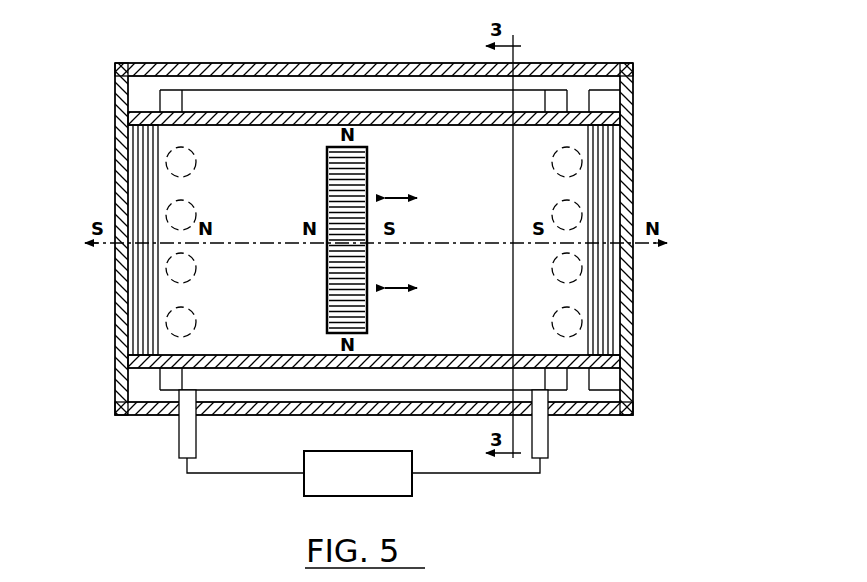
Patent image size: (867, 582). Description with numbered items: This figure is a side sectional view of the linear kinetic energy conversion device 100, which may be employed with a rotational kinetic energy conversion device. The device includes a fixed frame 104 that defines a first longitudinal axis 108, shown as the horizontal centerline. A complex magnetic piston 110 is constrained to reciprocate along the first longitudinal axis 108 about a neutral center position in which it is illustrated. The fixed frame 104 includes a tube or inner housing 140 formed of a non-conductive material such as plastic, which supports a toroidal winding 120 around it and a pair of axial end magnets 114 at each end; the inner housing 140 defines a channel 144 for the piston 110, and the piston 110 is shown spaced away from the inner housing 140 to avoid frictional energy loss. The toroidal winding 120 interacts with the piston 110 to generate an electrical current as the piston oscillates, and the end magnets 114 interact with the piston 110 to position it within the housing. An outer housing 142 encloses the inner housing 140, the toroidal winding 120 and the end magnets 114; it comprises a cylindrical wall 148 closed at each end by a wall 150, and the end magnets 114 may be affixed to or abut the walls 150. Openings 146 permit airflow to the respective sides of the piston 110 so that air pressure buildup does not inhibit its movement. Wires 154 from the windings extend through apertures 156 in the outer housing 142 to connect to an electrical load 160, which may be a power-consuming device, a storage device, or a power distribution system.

The linear kinetic energy conversion device 100 is at (752, 70).
The fixed frame 104 is at (142, 63).
The first longitudinal axis 108 is at (638, 247).
The complex magnetic piston 110 is at (367, 172).
The axial end magnets 114 is at (143, 192).
The toroidal winding 120 is at (342, 92).
The inner housing 140 is at (565, 126).
The outer housing 142 is at (595, 63).
The channel 144 is at (234, 128).
The openings 146 is at (585, 158).
The cylindrical wall 148 is at (193, 63).
The wall 150 is at (116, 117).
The wires 154 is at (187, 467).
The apertures 156 is at (178, 435).
The electrical load 160 is at (317, 498).